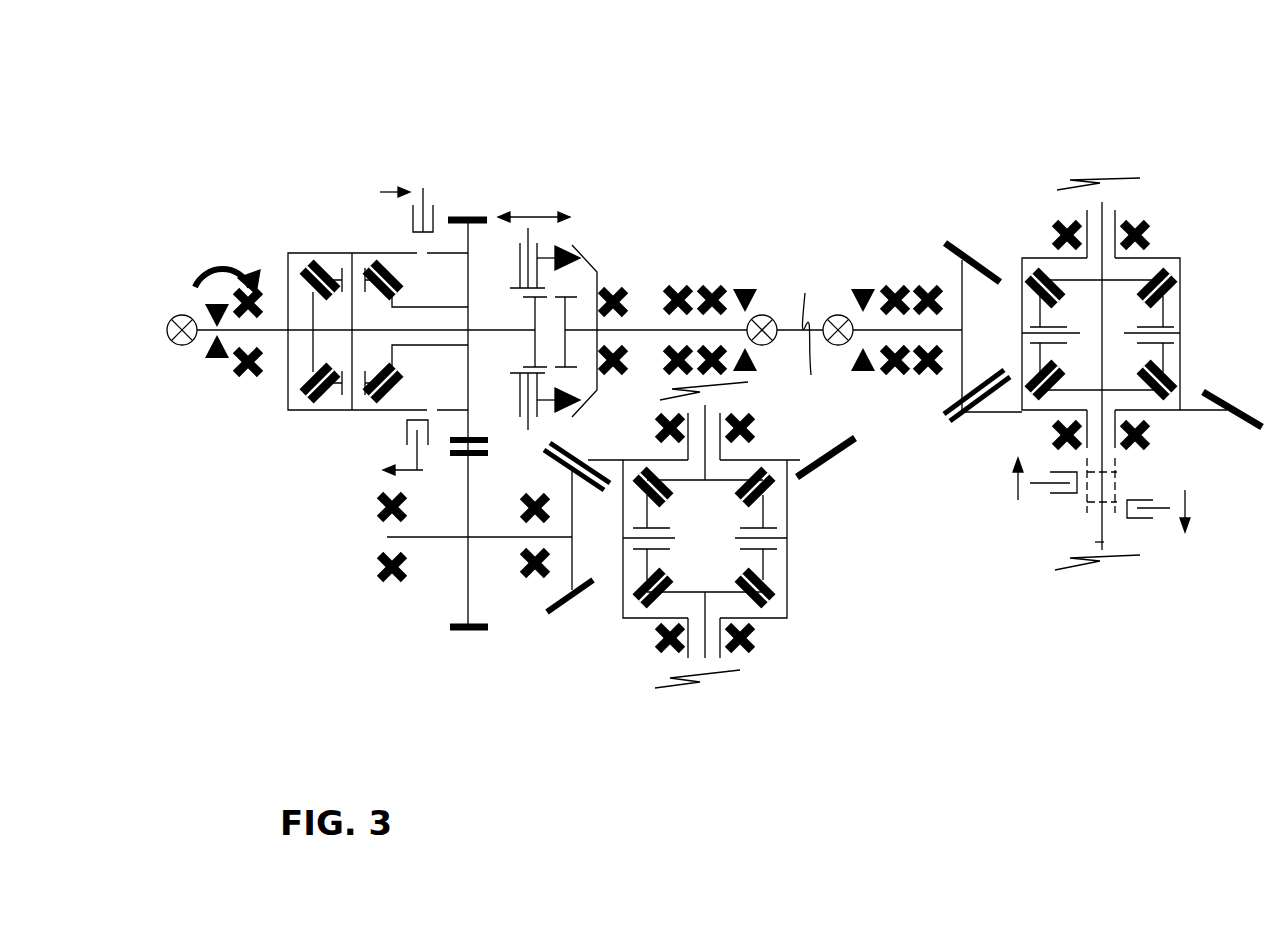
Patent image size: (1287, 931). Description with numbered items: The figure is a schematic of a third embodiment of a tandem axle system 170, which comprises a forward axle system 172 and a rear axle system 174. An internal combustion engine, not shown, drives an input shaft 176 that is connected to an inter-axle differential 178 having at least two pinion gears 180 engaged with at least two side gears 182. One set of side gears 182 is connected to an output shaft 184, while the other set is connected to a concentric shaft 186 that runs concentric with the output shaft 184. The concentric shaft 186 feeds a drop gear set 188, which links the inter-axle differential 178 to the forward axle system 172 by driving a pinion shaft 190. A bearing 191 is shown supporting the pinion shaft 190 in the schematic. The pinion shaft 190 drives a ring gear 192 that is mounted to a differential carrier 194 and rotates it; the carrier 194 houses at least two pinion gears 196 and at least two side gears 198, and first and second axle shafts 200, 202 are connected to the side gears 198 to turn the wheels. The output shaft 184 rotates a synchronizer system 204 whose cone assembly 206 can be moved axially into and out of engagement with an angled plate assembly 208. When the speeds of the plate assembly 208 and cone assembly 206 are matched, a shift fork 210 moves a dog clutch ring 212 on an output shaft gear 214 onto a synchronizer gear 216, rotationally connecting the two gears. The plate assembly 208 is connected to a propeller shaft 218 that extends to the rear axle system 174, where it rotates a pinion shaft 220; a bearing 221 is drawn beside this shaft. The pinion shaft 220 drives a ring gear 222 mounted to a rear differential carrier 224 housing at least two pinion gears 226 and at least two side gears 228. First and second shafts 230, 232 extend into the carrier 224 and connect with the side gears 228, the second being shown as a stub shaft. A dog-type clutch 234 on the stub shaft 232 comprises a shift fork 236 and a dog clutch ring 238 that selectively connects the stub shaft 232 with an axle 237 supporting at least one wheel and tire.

The tandem axle system 170 is at (708, 168).
The forward axle system 172 is at (743, 556).
The rear axle system 174 is at (1115, 313).
The input shaft 176 is at (277, 330).
The inter-axle differential 178 is at (313, 242).
The pinion gears 180 is at (323, 274).
The side gears 182 is at (305, 385).
The output shaft 184 is at (425, 330).
The concentric shaft 186 is at (428, 346).
The drop gear set 188 is at (445, 480).
The pinion shaft 190 is at (490, 540).
The bearing 191 is at (563, 610).
The ring gear 192 is at (572, 448).
The differential carrier 194 is at (789, 562).
The pinion gears 196 is at (767, 490).
The side gears 198 is at (765, 600).
The first axle shaft 200 is at (705, 448).
The second axle shaft 202 is at (705, 655).
The synchronizer system 204 is at (553, 200).
The cone assembly 206 is at (575, 230).
The plate assembly 208 is at (600, 248).
The shift fork 210 is at (528, 422).
The dog clutch ring 212 is at (517, 373).
The output shaft gear 214 is at (535, 310).
The synchronizer gear 216 is at (573, 367).
The propeller shaft 218 is at (791, 325).
The pinion shaft 220 is at (910, 330).
The bearing 221 is at (947, 410).
The ring gear 222 is at (962, 418).
The rear differential carrier 224 is at (1182, 350).
The pinion gears 226 is at (1170, 295).
The side gears 228 is at (1165, 276).
The first shaft 230 is at (1105, 205).
The second shaft 232 is at (1105, 452).
The clutch 234 is at (1045, 503).
The shift fork 236 is at (1165, 510).
The axle 237 is at (1095, 542).
The dog clutch ring 238 is at (1150, 495).